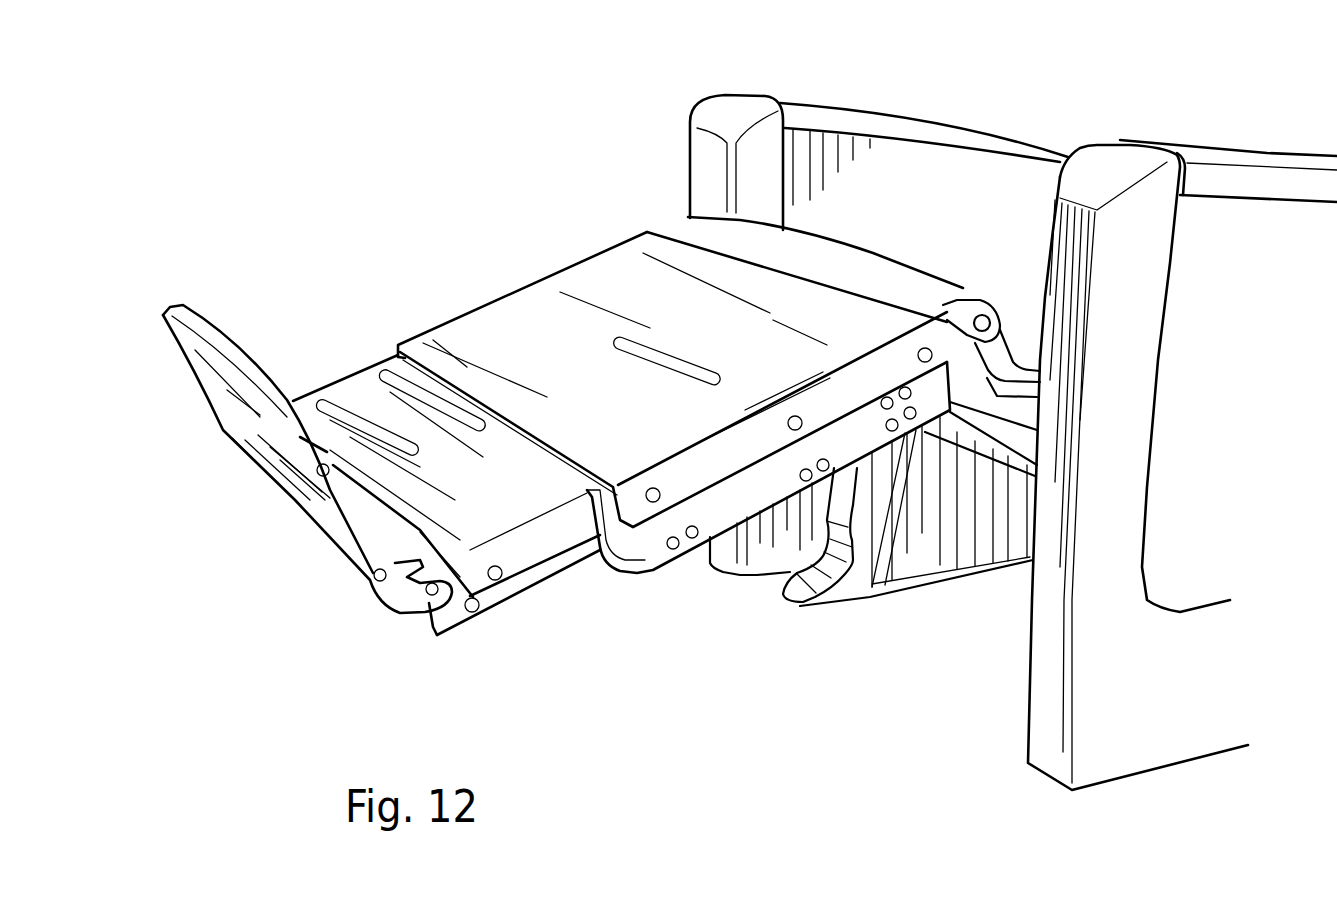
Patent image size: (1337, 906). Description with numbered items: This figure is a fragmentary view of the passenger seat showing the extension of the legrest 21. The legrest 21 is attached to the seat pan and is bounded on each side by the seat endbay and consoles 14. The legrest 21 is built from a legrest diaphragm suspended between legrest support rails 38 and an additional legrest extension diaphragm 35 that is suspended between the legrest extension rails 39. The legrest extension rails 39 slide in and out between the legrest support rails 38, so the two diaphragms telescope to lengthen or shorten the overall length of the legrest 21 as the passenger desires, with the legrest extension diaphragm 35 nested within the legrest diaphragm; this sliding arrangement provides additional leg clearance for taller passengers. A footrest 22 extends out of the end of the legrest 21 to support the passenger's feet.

The seat endbay and consoles 14 is at (735, 118).
The legrest 21 is at (423, 195).
The footrest 22 is at (238, 422).
The legrest extension diaphragm 35 is at (373, 397).
The legrest support rails 38 is at (520, 347).
The legrest extension rails 39 is at (513, 588).